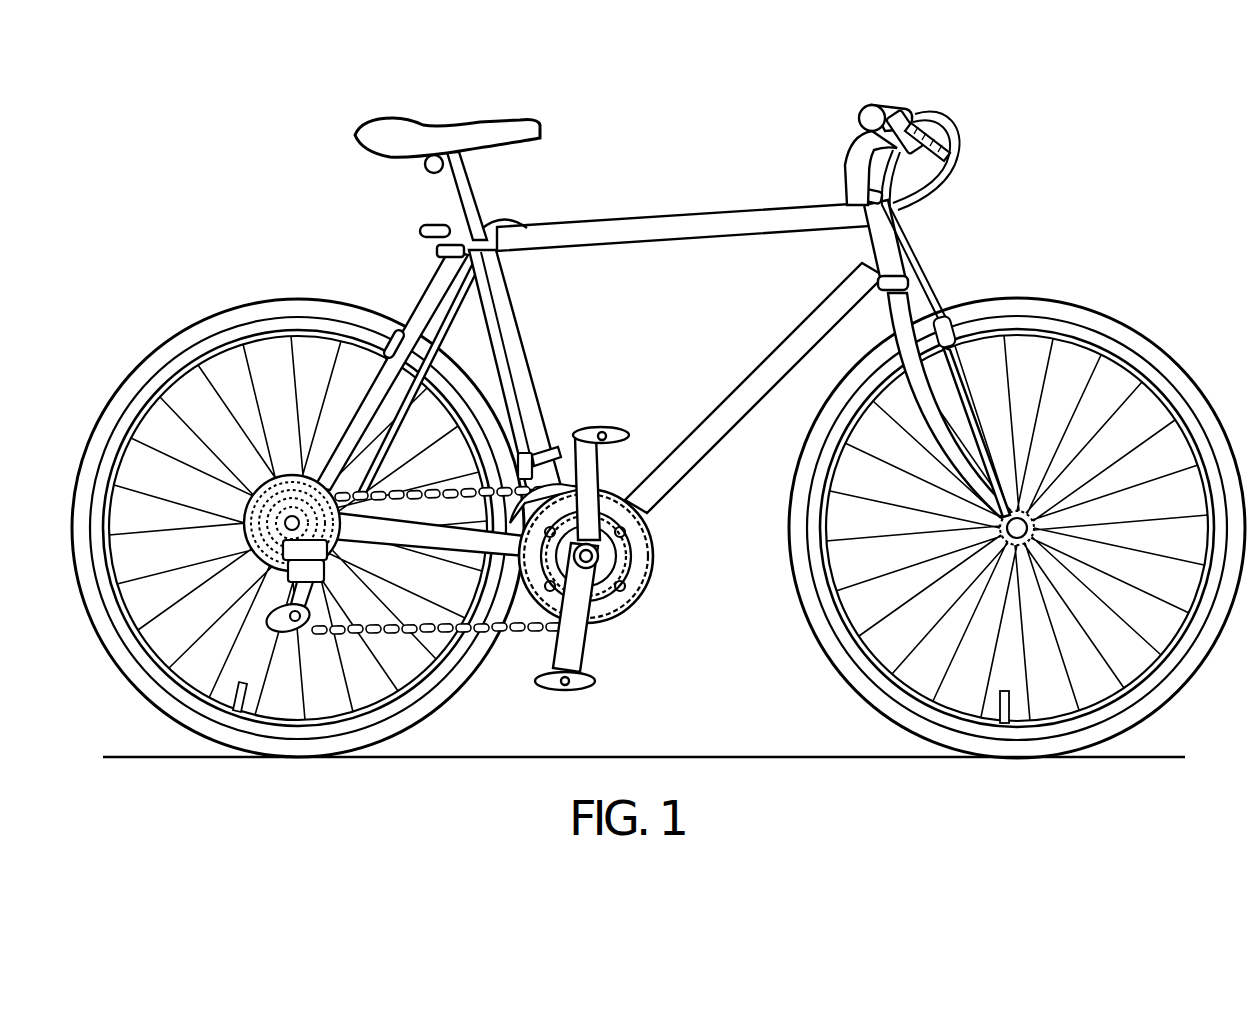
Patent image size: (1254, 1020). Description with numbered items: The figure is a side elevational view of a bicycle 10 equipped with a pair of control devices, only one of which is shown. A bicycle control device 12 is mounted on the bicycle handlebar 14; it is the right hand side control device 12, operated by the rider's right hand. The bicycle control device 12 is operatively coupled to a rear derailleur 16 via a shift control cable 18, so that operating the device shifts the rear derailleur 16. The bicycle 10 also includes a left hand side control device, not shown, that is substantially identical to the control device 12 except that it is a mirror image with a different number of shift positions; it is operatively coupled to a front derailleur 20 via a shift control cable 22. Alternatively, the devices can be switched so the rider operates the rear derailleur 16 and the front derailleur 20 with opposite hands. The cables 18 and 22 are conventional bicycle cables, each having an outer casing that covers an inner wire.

The bicycle 10 is at (658, 407).
The bicycle control device 12 is at (900, 158).
The bicycle handlebar 14 is at (911, 103).
The rear derailleur 16 is at (262, 592).
The shift control cable 18 is at (963, 168).
The front derailleur 20 is at (564, 472).
The shift control cable 22 is at (500, 377).